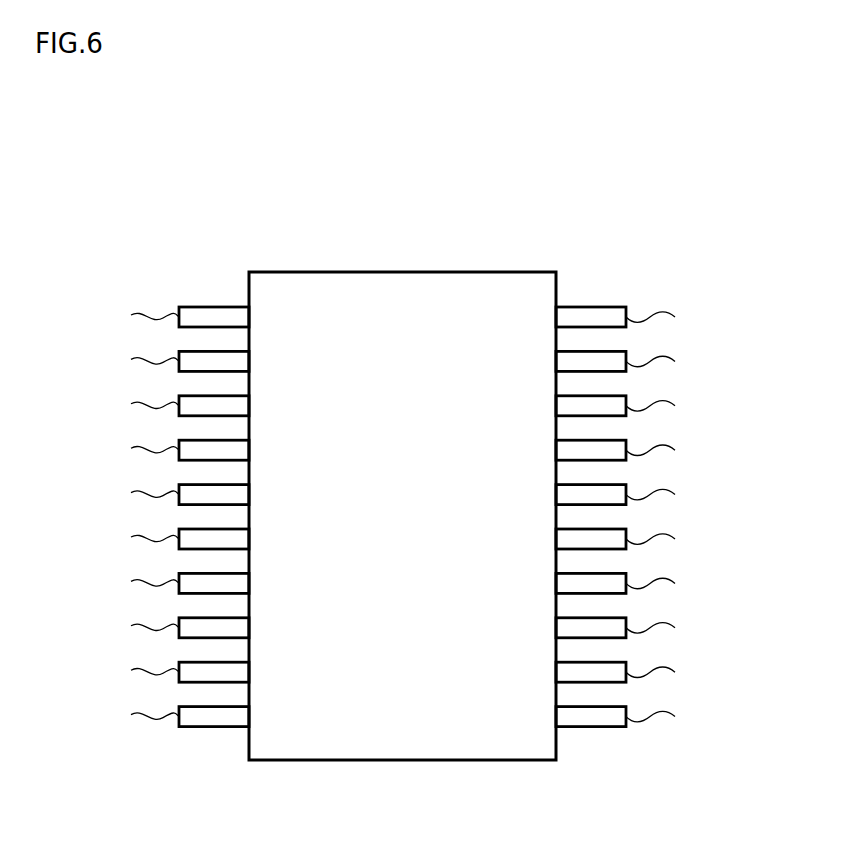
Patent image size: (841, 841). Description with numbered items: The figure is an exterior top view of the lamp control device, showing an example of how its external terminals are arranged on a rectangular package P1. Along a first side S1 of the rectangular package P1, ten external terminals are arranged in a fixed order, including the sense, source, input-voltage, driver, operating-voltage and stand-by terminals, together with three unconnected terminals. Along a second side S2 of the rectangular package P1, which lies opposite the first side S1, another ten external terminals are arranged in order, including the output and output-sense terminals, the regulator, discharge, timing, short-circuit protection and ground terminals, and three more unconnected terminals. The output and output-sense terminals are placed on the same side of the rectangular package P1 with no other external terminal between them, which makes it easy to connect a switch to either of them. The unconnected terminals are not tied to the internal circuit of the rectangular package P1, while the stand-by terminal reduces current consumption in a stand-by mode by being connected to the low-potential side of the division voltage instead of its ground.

The rectangular package P1 is at (403, 272).
The first side S1 is at (249, 288).
The second side S2 is at (556, 288).